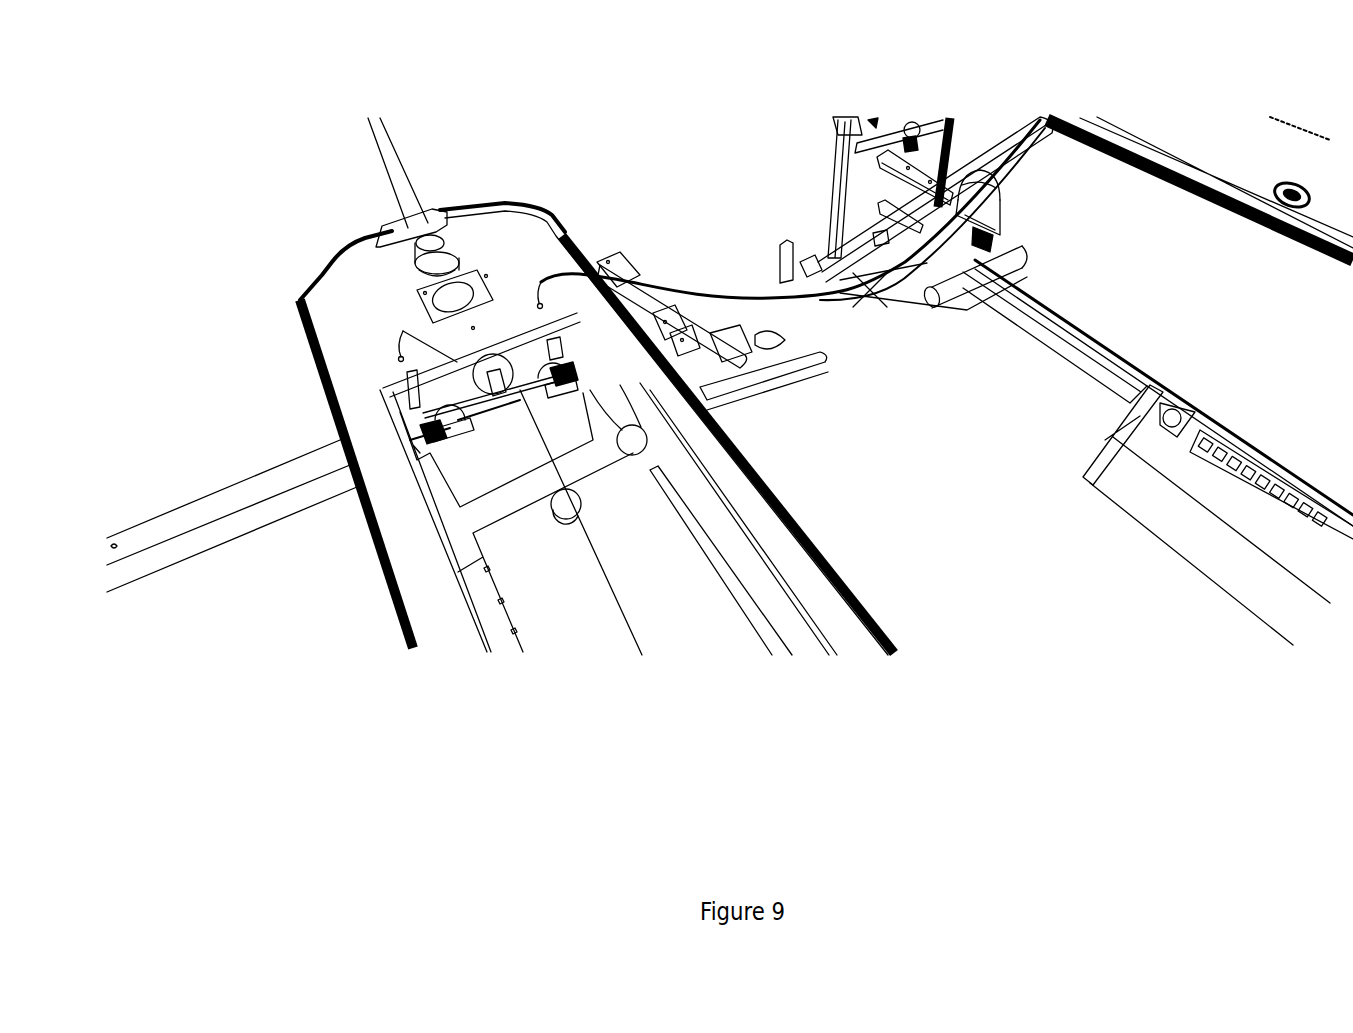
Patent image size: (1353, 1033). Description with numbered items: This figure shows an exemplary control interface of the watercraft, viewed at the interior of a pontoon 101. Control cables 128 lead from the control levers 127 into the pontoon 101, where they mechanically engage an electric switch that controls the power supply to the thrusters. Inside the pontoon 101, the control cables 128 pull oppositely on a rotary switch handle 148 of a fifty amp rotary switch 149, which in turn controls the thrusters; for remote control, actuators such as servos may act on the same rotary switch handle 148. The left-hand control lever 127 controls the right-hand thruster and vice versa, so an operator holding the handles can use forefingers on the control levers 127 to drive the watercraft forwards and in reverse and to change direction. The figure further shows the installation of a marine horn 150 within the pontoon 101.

The pontoon 101 is at (708, 42).
The control cables 128 is at (568, 266).
The rotary switch 149 is at (403, 331).
The control levers 127 is at (793, 362).
The marine horn 150 is at (645, 444).
The rotary switch handle 148 is at (574, 517).